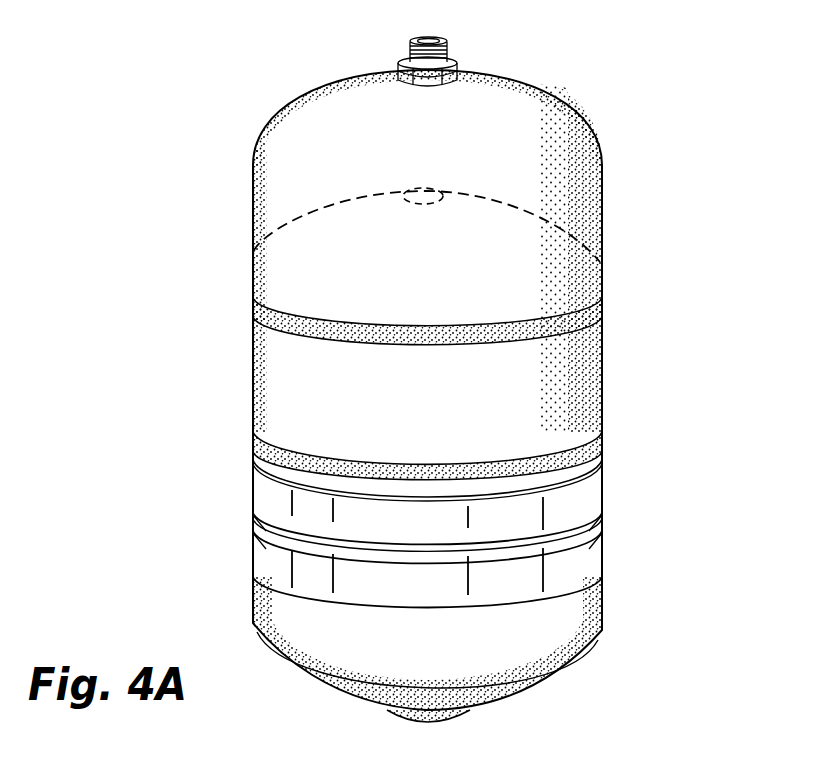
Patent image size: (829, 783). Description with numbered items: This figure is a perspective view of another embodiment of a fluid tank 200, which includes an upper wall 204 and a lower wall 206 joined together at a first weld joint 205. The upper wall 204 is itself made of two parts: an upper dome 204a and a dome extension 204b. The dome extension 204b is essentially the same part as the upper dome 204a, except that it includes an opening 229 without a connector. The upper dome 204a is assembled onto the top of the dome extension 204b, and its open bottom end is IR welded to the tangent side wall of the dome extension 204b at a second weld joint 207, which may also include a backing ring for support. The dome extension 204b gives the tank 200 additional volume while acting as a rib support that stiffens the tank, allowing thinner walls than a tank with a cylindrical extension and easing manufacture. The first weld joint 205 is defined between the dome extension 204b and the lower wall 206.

The fluid tank 200 is at (200, 209).
The upper wall 204 is at (469, 258).
The upper dome 204a is at (604, 167).
The dome extension 204b is at (603, 381).
The second weld joint 207 is at (603, 300).
The weld joint 205 is at (603, 437).
The lower wall 206 is at (612, 644).
The opening 229 is at (416, 193).